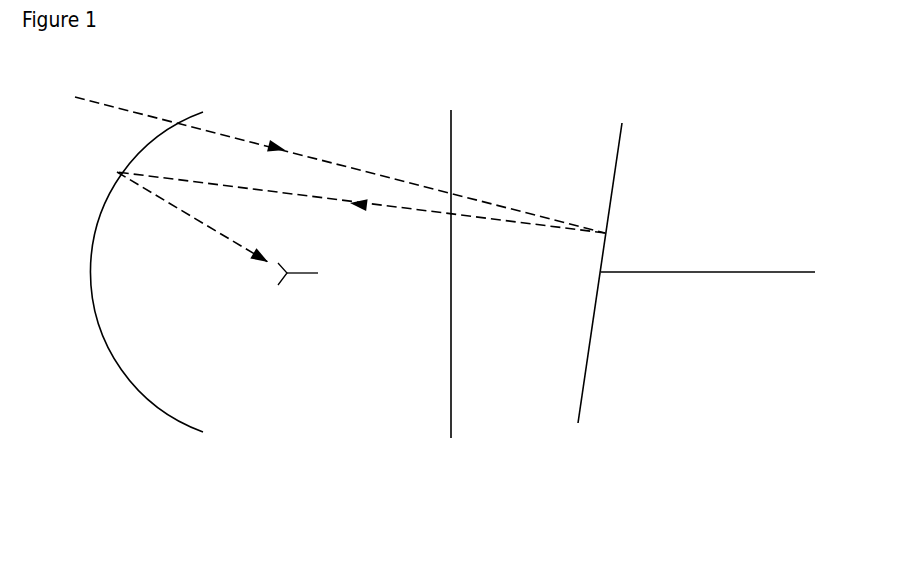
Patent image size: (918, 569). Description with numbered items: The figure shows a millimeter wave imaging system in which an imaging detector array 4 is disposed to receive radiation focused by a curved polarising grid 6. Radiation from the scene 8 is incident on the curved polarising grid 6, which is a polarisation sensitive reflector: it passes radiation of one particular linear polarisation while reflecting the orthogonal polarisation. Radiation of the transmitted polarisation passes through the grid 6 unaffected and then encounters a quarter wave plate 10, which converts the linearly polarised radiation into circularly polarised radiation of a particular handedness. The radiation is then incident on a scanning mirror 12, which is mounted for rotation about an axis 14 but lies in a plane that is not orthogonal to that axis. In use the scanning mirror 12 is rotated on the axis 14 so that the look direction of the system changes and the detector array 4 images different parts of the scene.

The imaging detector array 4 is at (302, 280).
The curved polarising grid 6 is at (132, 395).
The radiation from the scene 8 is at (340, 155).
The quarter wave plate 10 is at (455, 122).
The scanning mirror 12 is at (623, 155).
The axis 14 is at (723, 268).